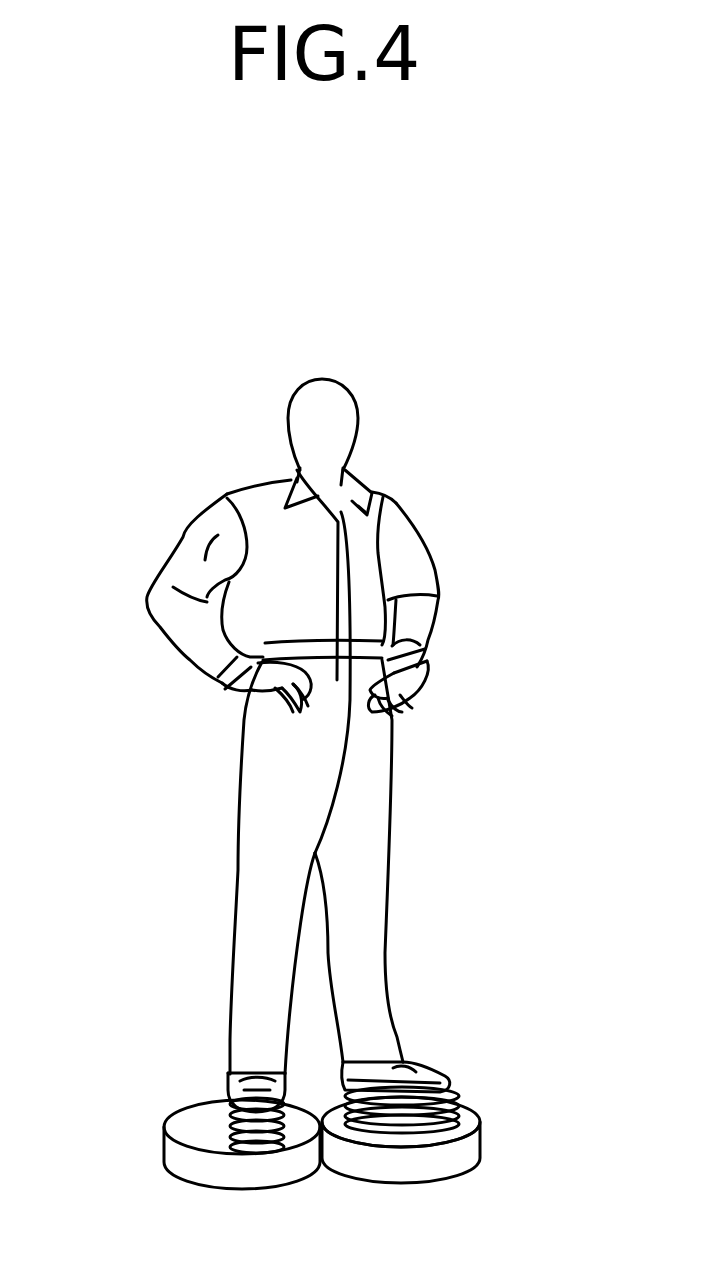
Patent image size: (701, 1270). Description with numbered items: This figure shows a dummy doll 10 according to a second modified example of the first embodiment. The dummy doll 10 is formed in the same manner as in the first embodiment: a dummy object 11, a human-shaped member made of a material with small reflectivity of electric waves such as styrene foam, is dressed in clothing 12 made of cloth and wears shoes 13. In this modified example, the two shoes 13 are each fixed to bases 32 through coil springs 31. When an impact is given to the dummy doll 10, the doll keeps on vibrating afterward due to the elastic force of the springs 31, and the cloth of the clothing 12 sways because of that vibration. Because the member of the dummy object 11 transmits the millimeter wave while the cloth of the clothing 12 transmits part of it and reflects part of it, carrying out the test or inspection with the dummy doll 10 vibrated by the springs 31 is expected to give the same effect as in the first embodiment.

The dummy doll 10 is at (393, 763).
The dummy object 11 is at (358, 413).
The clothing 12 is at (438, 568).
The shoes 13 is at (235, 1088).
The coil springs 31 is at (232, 1128).
The bases 32 is at (163, 1148).